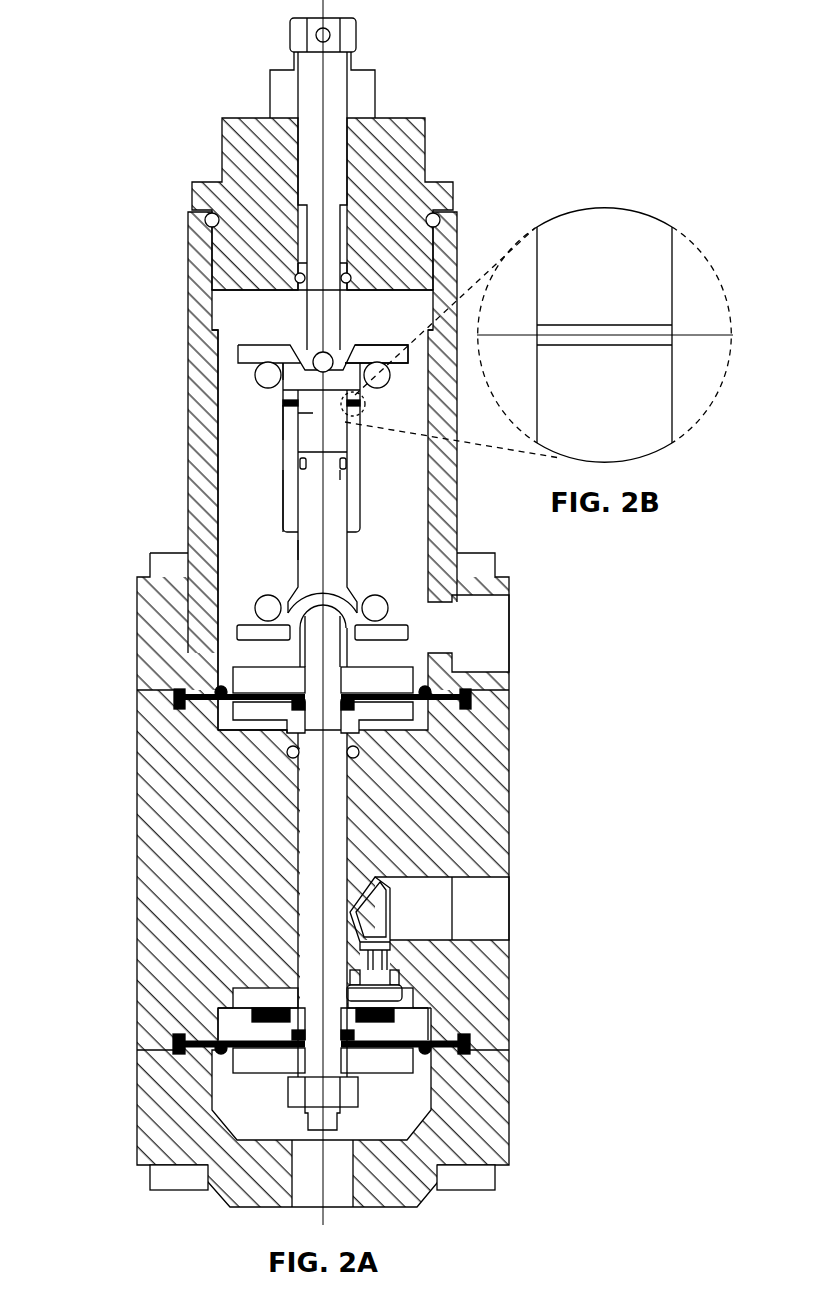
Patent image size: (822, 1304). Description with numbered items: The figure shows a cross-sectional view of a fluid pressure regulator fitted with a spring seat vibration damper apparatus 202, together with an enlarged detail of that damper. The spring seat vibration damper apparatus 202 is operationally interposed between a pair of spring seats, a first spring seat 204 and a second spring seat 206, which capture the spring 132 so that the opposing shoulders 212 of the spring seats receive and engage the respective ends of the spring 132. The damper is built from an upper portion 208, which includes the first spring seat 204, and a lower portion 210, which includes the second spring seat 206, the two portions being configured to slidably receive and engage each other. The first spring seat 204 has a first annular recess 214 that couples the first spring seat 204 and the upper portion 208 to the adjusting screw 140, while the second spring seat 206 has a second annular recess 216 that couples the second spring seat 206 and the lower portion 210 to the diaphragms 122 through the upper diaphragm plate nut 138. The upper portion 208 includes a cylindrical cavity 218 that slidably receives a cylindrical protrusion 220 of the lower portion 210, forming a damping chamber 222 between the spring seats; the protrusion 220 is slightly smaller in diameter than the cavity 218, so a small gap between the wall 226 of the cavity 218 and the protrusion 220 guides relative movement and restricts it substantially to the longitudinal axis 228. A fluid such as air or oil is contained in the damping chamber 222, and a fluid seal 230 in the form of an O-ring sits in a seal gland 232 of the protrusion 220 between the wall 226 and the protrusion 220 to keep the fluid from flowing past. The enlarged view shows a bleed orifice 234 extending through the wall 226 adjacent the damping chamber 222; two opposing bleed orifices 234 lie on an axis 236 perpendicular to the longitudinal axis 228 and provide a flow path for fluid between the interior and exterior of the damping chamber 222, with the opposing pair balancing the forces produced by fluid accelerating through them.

In FIG. 2A, the diaphragms 122 is at (222, 702).
In FIG. 2A, the spring 132 is at (258, 376).
In FIG. 2A, the upper diaphragm plate nut 138 is at (360, 653).
In FIG. 2A, the adjusting screw 140 is at (298, 175).
In FIG. 2A, the spring seat vibration damper apparatus 202 is at (378, 528).
In FIG. 2A, the first spring seat 204 is at (392, 345).
In FIG. 2A, the second spring seat 206 is at (243, 620).
In FIG. 2A, the upper portion 208 is at (283, 490).
In FIG. 2A, the lower portion 210 is at (262, 598).
In FIG. 2A, the shoulders 212 is at (283, 356).
In FIG. 2A, the first annular recess 214 is at (305, 345).
In FIG. 2A, the second annular recess 216 is at (297, 630).
In FIG. 2A, the cavity 218 is at (285, 402).
In FIG. 2A, the protrusion 220 is at (333, 448).
In FIG. 2A, the damping chamber 222 is at (287, 413).
In FIG. 2A, the wall 226 is at (300, 447).
In FIG. 2B, the wall 226 is at (672, 268).
In FIG. 2A, the longitudinal axis 228 is at (325, 541).
In FIG. 2A, the fluid seal 230 is at (338, 468).
In FIG. 2A, the seal gland 232 is at (337, 468).
In FIG. 2B, the bleed orifice 234 is at (550, 323).
In FIG. 2A, the axis 236 is at (343, 410).
In FIG. 2B, the axis 236 is at (695, 335).